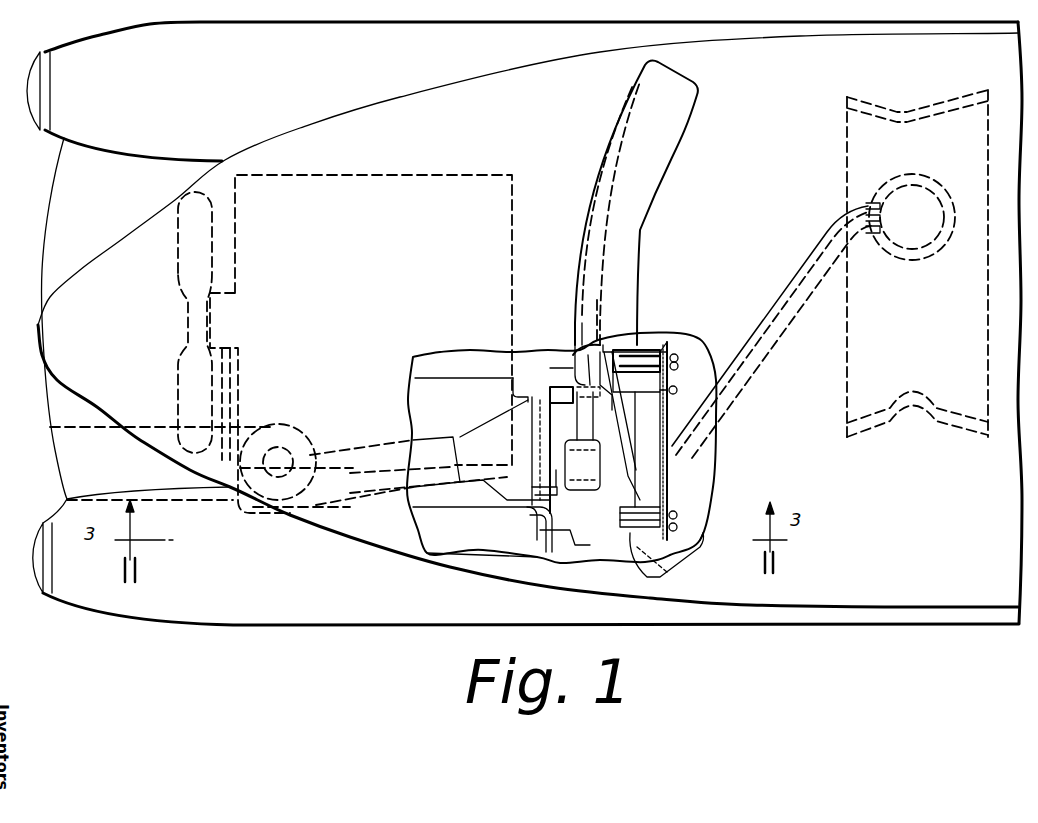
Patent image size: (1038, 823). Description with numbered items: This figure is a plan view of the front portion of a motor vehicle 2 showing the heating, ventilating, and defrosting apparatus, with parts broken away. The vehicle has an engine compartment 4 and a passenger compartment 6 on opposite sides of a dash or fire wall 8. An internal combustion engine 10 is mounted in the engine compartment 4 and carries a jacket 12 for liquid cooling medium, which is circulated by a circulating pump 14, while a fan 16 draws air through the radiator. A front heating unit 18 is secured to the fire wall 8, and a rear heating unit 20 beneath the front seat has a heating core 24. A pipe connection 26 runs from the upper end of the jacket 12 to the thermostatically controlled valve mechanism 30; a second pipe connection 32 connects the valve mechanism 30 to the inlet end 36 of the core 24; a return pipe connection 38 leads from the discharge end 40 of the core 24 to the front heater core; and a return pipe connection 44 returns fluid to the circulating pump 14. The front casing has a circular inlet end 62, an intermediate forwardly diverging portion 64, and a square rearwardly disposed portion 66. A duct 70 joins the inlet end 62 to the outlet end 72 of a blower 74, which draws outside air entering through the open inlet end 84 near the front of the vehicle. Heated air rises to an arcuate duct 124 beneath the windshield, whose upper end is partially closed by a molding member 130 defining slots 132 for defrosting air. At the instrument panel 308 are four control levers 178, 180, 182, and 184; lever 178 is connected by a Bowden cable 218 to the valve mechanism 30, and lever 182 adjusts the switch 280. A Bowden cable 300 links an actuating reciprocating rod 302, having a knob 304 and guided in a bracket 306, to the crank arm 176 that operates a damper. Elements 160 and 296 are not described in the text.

The motor vehicle 2 is at (60, 136).
The engine compartment 4 is at (457, 527).
The passenger compartment 6 is at (703, 510).
The dash or fire wall 8 is at (557, 533).
The internal combustion engine 10 is at (420, 387).
The jacket 12 is at (460, 357).
The circulating pump 14 is at (211, 308).
The fan 16 is at (183, 272).
The front heating unit 18 is at (500, 500).
The rear heating unit 20 is at (863, 303).
The heating core 24 is at (913, 177).
The pipe connection 26 is at (520, 380).
The thermostatically controlled valve mechanism 30 is at (555, 500).
The second pipe connection 32 is at (785, 290).
The inlet end 36 is at (873, 203).
The return pipe connection 38 is at (830, 264).
The discharge end 40 is at (880, 237).
The return pipe connection 44 is at (430, 508).
The inlet end 62 is at (478, 447).
The intermediate forwardly diverging portion 64 is at (477, 475).
The rearwardly disposed portion 66 is at (542, 407).
The duct 70 is at (393, 447).
The outlet end 72 is at (332, 458).
The blower 74 is at (277, 427).
The open inlet end 84 is at (50, 427).
The duct 124 is at (633, 228).
The molding member 130 is at (595, 279).
The slots 132 is at (620, 112).
The pivot block 160 is at (568, 443).
The crank arm 176 is at (552, 357).
The control lever 178 is at (693, 543).
The control lever 180 is at (675, 497).
The control lever 182 is at (670, 344).
The control lever 184 is at (670, 337).
The Bowden cable 218 is at (593, 513).
The adjustable switch 280 is at (612, 398).
The dashed line 296 is at (607, 343).
The Bowden cable 300 is at (624, 375).
The actuating reciprocating rod 302 is at (634, 420).
The knob 304 is at (674, 394).
The bracket 306 is at (676, 362).
The instrument panel 308 is at (640, 446).